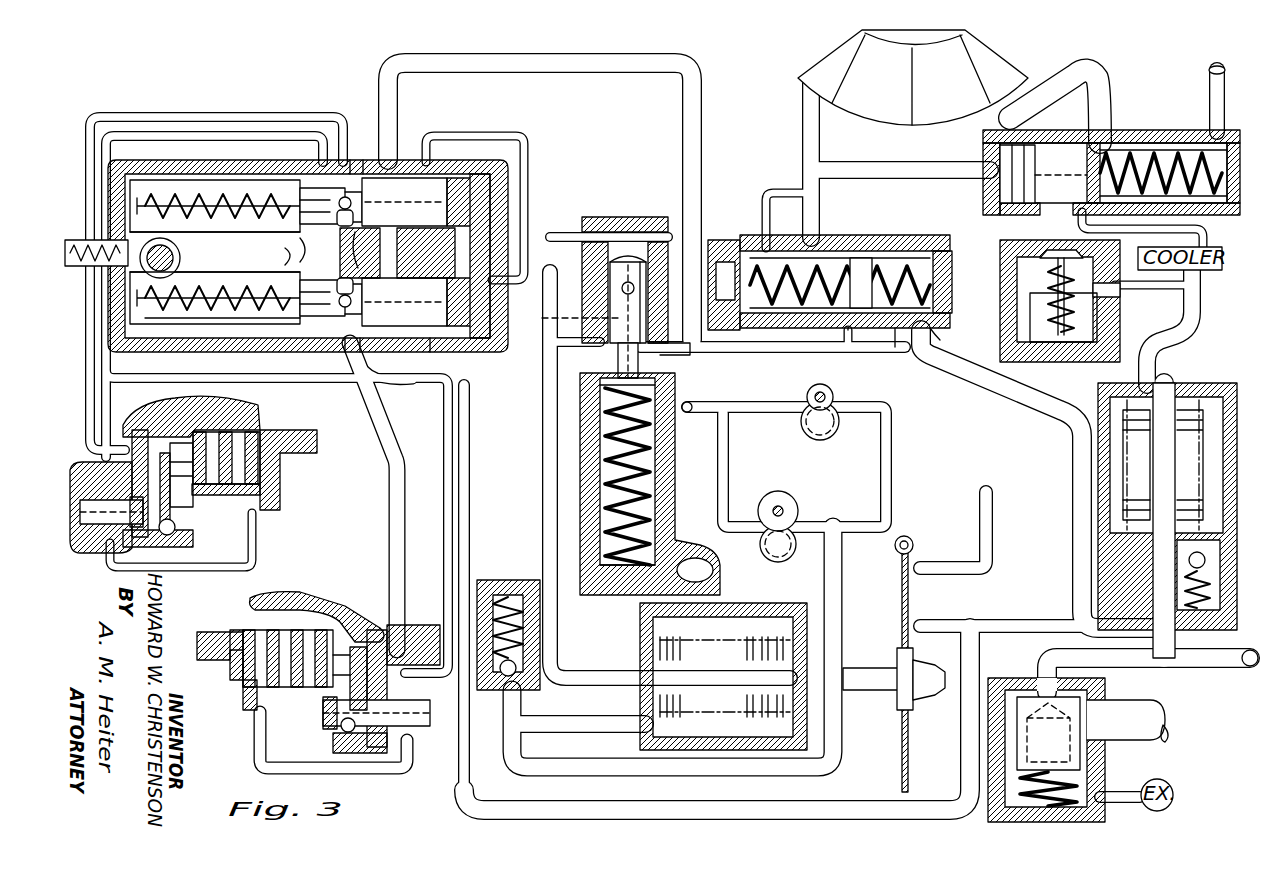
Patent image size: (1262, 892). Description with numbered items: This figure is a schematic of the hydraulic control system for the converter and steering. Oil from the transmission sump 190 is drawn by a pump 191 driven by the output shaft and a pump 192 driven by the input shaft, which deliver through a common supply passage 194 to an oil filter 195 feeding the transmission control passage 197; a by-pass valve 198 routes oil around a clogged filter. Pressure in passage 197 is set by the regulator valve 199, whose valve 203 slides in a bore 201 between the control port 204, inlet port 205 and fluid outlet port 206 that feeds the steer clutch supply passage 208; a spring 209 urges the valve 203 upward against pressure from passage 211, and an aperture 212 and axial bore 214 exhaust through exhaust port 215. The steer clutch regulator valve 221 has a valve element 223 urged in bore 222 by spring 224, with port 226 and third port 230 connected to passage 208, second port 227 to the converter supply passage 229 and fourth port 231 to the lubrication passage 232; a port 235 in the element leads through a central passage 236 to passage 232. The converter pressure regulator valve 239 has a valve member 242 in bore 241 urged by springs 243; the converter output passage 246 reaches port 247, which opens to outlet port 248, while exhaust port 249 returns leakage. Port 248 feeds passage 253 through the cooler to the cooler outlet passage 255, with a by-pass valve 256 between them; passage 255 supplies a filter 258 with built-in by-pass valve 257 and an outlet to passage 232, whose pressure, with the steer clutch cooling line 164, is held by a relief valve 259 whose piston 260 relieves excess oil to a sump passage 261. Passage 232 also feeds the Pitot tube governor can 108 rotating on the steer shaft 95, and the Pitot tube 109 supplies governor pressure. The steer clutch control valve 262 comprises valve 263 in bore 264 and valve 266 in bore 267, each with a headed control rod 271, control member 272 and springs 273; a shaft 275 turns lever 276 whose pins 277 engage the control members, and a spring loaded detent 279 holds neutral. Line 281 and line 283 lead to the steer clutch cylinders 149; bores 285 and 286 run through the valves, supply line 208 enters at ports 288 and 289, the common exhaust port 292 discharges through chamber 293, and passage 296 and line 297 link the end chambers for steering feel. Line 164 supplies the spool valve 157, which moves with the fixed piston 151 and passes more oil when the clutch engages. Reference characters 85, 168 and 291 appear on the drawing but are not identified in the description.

The clutch plates 85 is at (281, 433).
The steer shaft 95 is at (866, 668).
The Pitot tube governor can 108 is at (905, 535).
The Pitot tube 109 is at (950, 572).
The steer clutch cylinder 149 is at (125, 425).
The fixed piston 151 is at (375, 622).
The spool valve 157 is at (100, 528).
The steer clutch cooling line 164 is at (780, 812).
The clutch drain pipe 168 is at (258, 560).
The transmission sump 190 is at (688, 412).
The pump 191 is at (838, 392).
The pump 192 is at (760, 495).
The common supply passage 194 is at (824, 567).
The oil filter 195 is at (740, 605).
The transmission control passage 197 is at (542, 445).
The by-pass valve 198 is at (512, 580).
The regulator valve 199 is at (676, 445).
The bore 201 is at (655, 500).
The transmission control pressure regulating valve 203 is at (612, 262).
The control port 204 is at (615, 217).
The inlet port 205 is at (545, 345).
The fluid outlet port 206 is at (670, 352).
The steer clutch supply passage 208 is at (702, 180).
The spring 209 is at (623, 570).
The passage 211 is at (556, 232).
The aperture 212 is at (630, 282).
The axial bore 214 is at (565, 312).
The exhaust port 215 is at (720, 565).
The steer clutch regulator valve 221 is at (938, 240).
The bore 222 is at (895, 250).
The valve element 223 is at (860, 250).
The spring 224 is at (940, 270).
The port 226 is at (725, 245).
The second port 227 is at (770, 240).
The converter supply passage 229 is at (803, 132).
The third port 230 is at (880, 335).
The fourth port 231 is at (935, 325).
The lubrication passage 232 is at (1010, 393).
The port 235 is at (810, 250).
The central passage 236 is at (858, 335).
The converter pressure regulator valve 239 is at (982, 135).
The bore 241 is at (1168, 145).
The valve member 242 is at (1025, 185).
The springs 243 is at (1155, 150).
The converter output passage 246 is at (1040, 80).
The port 247 is at (1092, 143).
The outlet port 248 is at (1055, 217).
The exhaust port 249 is at (1208, 75).
The passage 253 is at (1185, 228).
The cooler outlet passage 255 is at (1178, 332).
The by-pass valve 256 is at (1000, 325).
The built-in by-pass valve 257 is at (1185, 560).
The filter 258 is at (1222, 395).
The relief valve 259 is at (1030, 678).
The piston 260 is at (1070, 705).
The sump passage 261 is at (1170, 740).
The steer clutch control valve 262 is at (172, 108).
The valve 263 is at (308, 180).
The bore 264 is at (355, 160).
The valve 266 is at (440, 345).
The bore 267 is at (380, 378).
The headed control rod 271 is at (140, 182).
The control member 272 is at (170, 178).
The springs 273 is at (218, 180).
The shaft 275 is at (178, 265).
The lever 276 is at (215, 252).
The pin 277 is at (165, 338).
The spring loaded detent 279 is at (175, 250).
The line 281 is at (283, 118).
The line 283 is at (398, 440).
The bore 285 is at (396, 253).
The bore 286 is at (368, 352).
The port 288 is at (392, 175).
The port 289 is at (440, 384).
The shift valve housing 291 is at (112, 345).
The common exhaust port 292 is at (280, 248).
The chamber 293 is at (262, 180).
The passage 296 is at (462, 248).
The line 297 is at (452, 132).